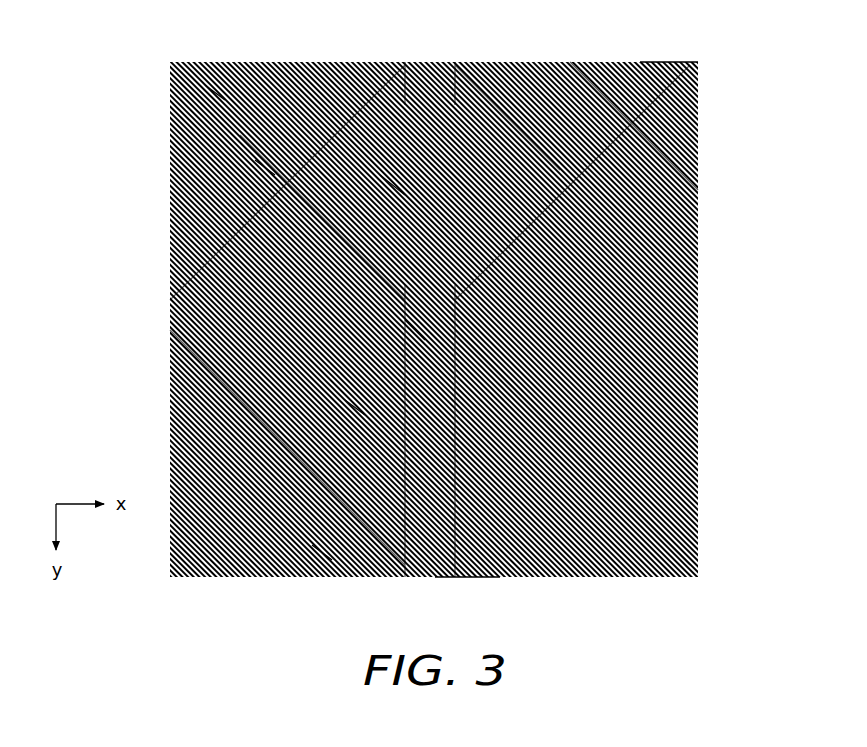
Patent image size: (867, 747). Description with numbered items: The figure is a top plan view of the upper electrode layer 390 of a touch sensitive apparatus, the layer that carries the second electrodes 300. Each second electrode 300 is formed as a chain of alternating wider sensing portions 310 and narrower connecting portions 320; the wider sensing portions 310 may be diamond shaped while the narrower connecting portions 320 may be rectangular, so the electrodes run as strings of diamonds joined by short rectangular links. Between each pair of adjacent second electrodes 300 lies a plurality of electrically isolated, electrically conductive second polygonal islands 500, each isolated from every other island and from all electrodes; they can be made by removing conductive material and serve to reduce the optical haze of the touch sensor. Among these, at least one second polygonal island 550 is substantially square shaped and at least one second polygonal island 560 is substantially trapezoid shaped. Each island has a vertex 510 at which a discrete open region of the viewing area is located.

The second electrode 300 is at (430, 63).
The wider sensing portion 310 is at (400, 193).
The narrower connecting portion 320 is at (420, 330).
The upper electrode layer 390 is at (640, 63).
The second polygonal island 500 is at (214, 92).
The vertex 510 is at (265, 165).
The substantially square shaped second polygonal island 550 is at (322, 550).
The substantially trapezoid shaped second polygonal island 560 is at (355, 405).